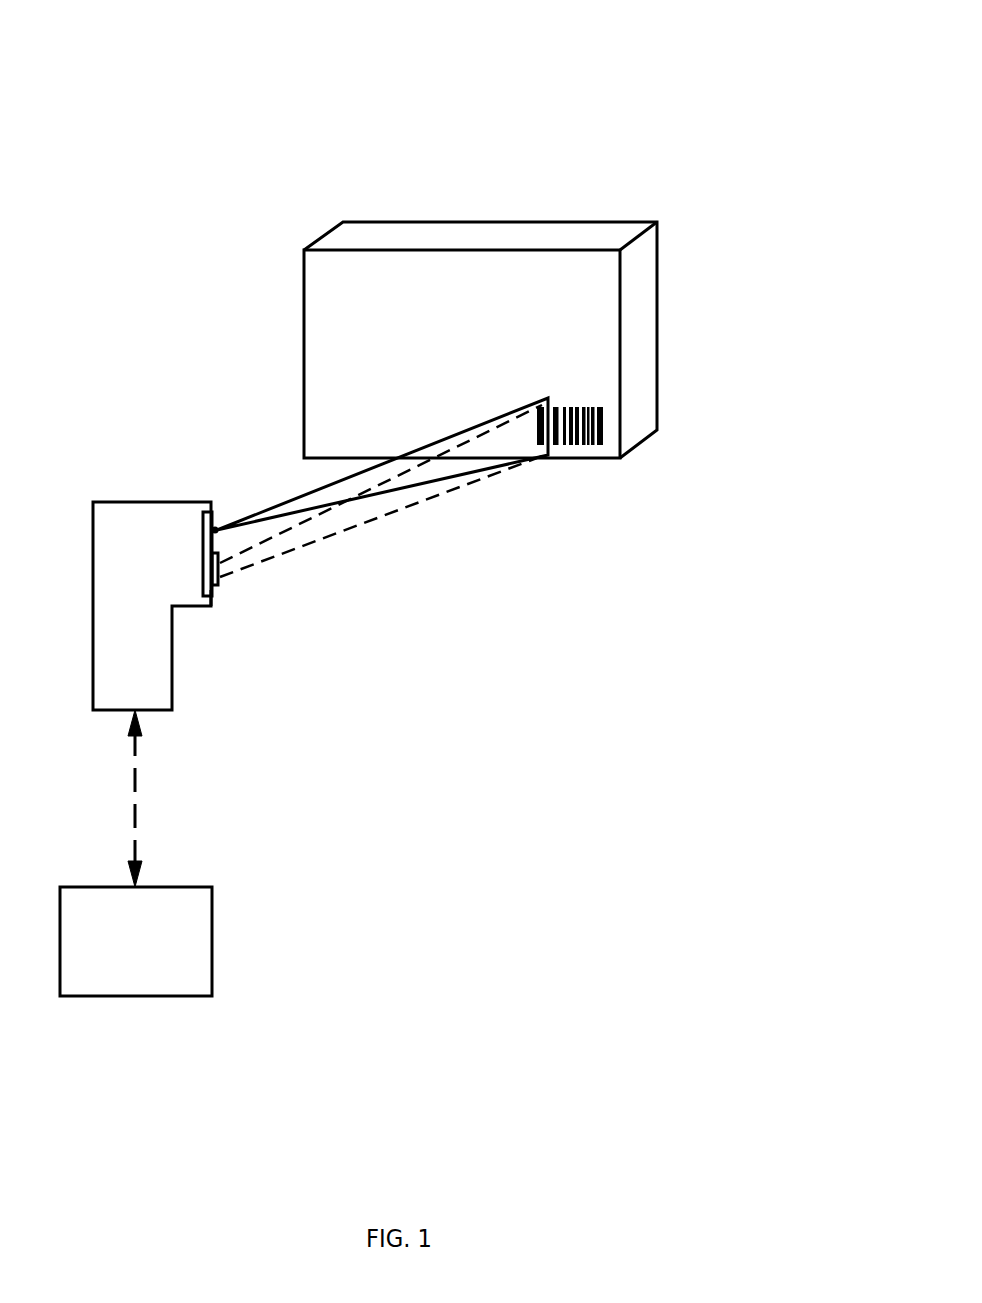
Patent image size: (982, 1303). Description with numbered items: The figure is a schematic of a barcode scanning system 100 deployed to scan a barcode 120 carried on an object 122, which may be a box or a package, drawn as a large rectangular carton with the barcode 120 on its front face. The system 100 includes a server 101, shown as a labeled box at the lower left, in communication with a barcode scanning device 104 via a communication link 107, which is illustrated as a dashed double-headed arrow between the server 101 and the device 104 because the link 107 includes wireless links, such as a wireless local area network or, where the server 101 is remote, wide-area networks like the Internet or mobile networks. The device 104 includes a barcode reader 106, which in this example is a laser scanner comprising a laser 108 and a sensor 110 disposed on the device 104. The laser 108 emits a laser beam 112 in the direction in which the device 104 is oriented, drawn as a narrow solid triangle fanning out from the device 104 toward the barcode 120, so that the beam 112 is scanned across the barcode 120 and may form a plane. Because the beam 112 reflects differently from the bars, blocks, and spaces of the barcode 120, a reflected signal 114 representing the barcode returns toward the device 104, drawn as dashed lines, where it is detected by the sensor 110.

The barcode scanning system 100 is at (241, 106).
The server 101 is at (156, 940).
The barcode scanning device 104 is at (171, 568).
The barcode reader 106 is at (227, 607).
The communication link 107 is at (156, 798).
The laser 108 is at (216, 528).
The sensor 110 is at (220, 584).
The laser beam 112 is at (310, 500).
The reflected signal 114 is at (387, 512).
The barcode 120 is at (603, 410).
The object 122 is at (657, 243).